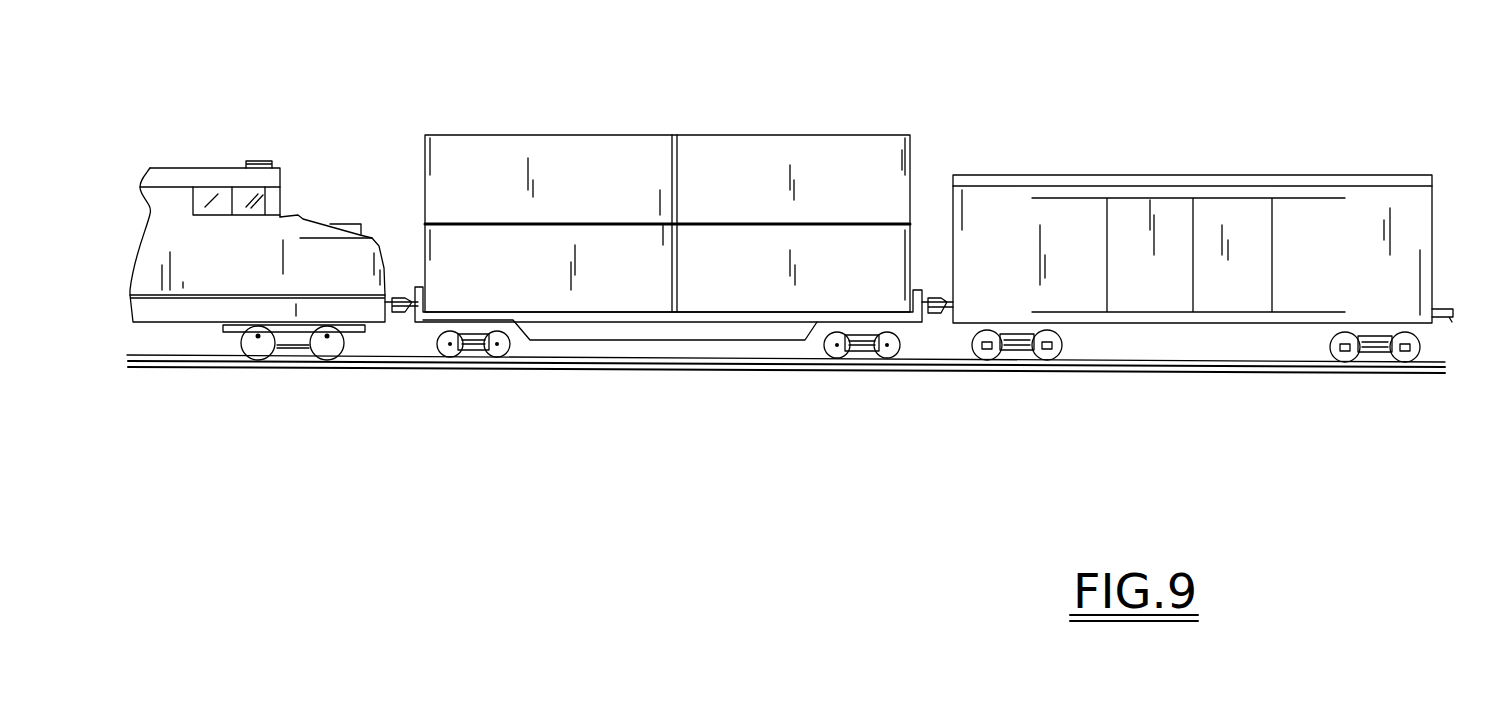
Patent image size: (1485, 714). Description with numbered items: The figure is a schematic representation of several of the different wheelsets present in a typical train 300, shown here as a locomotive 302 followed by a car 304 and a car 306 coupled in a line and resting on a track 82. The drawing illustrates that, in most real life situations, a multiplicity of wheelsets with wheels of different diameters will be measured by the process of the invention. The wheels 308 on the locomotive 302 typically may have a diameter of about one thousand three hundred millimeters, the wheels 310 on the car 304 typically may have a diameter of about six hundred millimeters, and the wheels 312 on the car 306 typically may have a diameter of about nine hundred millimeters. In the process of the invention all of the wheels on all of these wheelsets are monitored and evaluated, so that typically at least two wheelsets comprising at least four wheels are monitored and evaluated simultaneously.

The train 300 is at (652, 86).
The locomotive 302 is at (219, 169).
The car 304 is at (583, 138).
The car 306 is at (1078, 182).
The wheels 308 is at (305, 363).
The wheels 310 is at (452, 356).
The wheels 312 is at (1036, 358).
The track 82 is at (693, 368).